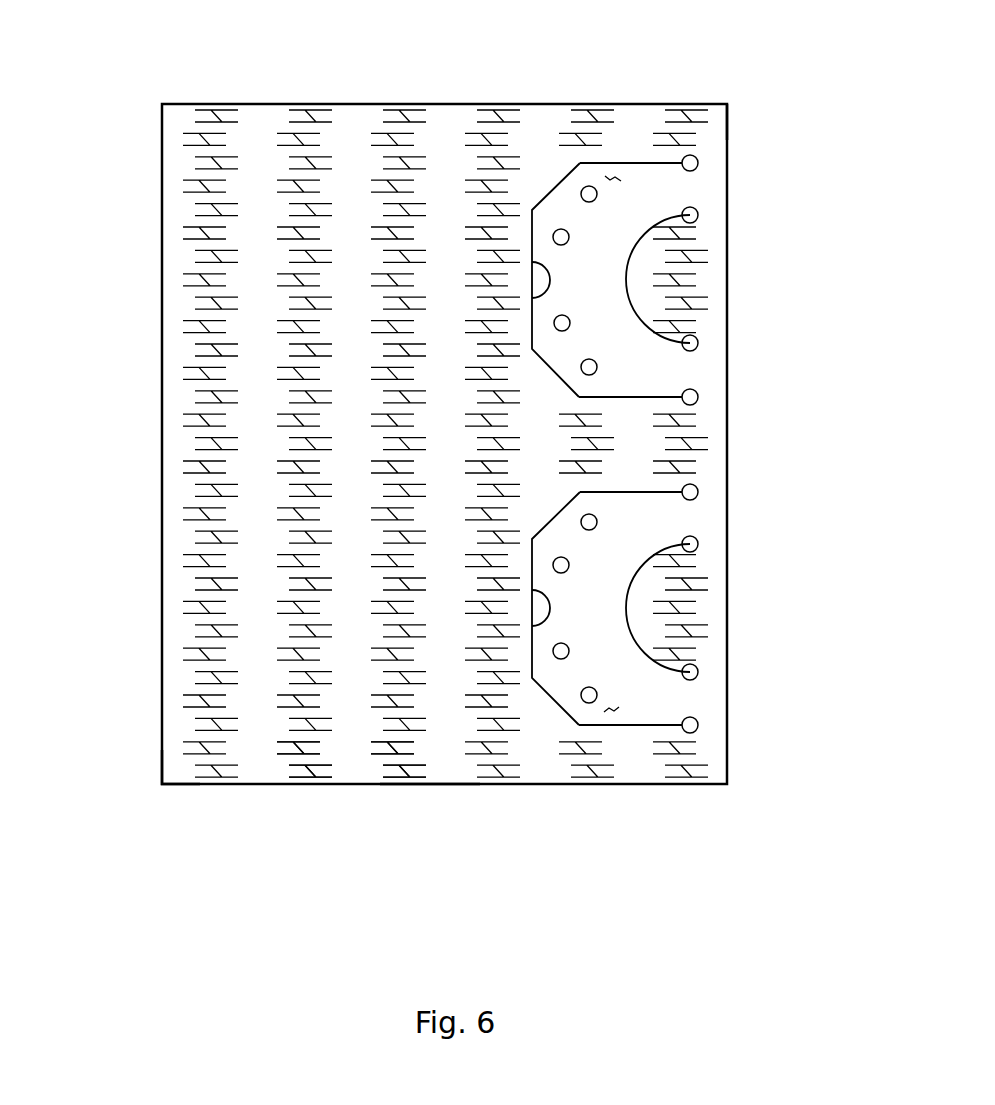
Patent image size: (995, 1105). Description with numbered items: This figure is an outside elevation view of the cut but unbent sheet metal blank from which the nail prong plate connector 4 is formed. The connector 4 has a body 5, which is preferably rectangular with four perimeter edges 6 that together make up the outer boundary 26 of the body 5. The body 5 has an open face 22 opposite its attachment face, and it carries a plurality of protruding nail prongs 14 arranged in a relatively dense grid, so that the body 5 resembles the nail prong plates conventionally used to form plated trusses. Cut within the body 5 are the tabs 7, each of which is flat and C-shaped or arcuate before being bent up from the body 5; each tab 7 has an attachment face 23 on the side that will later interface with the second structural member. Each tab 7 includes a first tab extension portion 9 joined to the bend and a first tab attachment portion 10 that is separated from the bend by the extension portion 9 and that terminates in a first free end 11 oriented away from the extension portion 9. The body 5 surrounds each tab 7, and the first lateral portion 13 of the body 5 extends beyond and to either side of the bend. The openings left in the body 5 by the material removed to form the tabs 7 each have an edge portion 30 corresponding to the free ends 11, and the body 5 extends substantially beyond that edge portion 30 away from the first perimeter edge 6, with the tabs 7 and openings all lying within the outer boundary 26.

The nail prong plate connector 4 is at (185, 104).
The body 5 is at (499, 440).
The perimeter edge 6 is at (727, 125).
The first tab 7 is at (631, 163).
The first tab extension portion 9 is at (660, 188).
The first tab attachment portion 10 is at (508, 446).
The first free end 11 is at (530, 233).
The first lateral portion 13 is at (705, 143).
The nail prongs 14 is at (297, 772).
The open face 22 is at (348, 768).
The attachment face 23 is at (613, 172).
The outer boundary 26 is at (426, 786).
The edge portion 30 is at (530, 280).